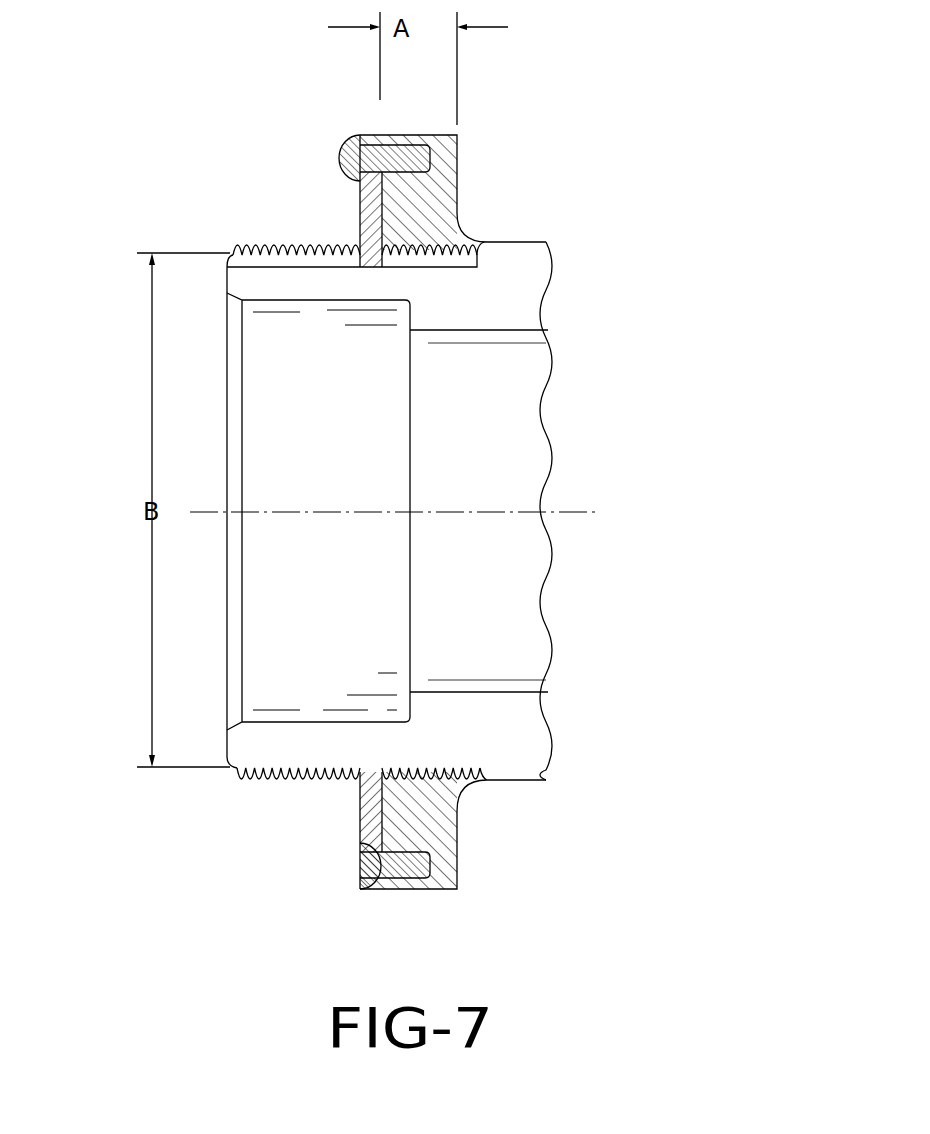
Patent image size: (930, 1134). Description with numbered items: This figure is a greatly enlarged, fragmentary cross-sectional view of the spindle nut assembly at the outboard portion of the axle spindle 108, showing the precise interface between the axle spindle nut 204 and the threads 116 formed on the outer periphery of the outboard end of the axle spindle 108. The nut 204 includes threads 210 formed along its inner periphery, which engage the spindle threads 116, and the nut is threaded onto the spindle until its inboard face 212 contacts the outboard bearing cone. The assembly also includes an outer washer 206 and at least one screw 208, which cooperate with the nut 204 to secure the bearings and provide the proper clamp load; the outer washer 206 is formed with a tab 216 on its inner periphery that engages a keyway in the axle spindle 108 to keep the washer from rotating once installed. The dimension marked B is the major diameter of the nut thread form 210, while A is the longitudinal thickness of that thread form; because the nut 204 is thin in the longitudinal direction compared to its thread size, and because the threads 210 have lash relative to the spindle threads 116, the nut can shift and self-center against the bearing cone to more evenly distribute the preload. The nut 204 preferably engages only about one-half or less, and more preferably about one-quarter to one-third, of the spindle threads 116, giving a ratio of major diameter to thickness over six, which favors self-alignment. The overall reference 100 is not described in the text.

The locking assembly 100 is at (100, 118).
The axle spindle 108 is at (522, 242).
The threads 116 is at (268, 775).
The axle spindle nut 204 is at (390, 892).
The outer washer 206 is at (352, 827).
The screw 208 is at (350, 140).
The threads 210 is at (412, 248).
The inboard face 212 is at (457, 160).
The tab 216 is at (370, 262).